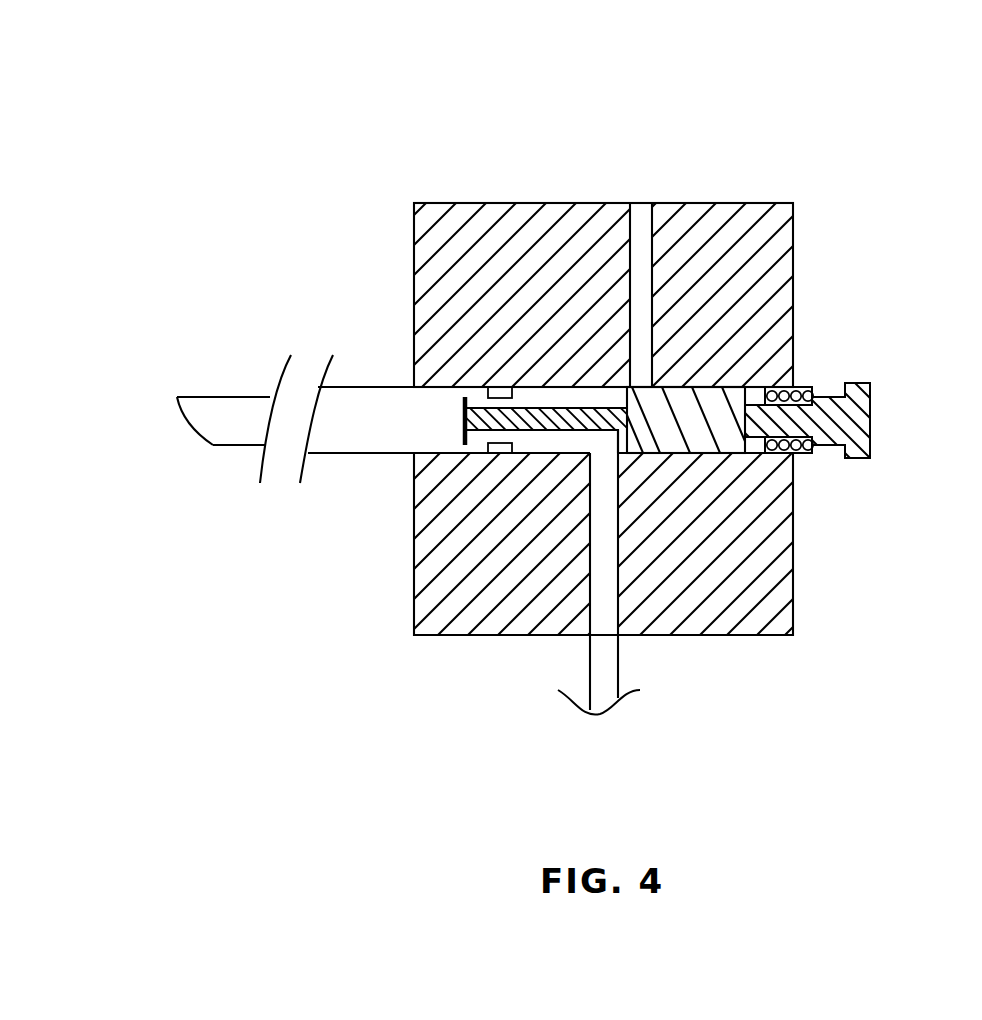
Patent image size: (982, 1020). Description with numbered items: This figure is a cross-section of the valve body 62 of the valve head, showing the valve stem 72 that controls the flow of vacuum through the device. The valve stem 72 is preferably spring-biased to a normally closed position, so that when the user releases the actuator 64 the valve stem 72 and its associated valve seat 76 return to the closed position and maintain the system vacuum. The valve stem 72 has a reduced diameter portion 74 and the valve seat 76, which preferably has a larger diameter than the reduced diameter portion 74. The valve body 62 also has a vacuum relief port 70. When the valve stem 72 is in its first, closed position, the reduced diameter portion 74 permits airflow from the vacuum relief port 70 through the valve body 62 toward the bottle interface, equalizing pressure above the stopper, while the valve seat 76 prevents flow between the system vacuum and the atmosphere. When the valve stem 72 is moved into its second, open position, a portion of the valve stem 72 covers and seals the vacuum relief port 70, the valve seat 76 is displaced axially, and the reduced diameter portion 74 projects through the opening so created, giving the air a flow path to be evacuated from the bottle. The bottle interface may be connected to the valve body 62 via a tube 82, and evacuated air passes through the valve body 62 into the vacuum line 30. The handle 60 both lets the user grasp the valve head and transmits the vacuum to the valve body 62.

The valve body 62 is at (397, 176).
The vacuum relief port 70 is at (643, 262).
The valve seat 76 is at (455, 403).
The reduced diameter portion 74 is at (566, 428).
The valve stem 72 is at (664, 409).
The actuator 64 is at (863, 392).
The handle 60 is at (390, 424).
The vacuum line 30 is at (221, 423).
The tube 82 is at (602, 668).